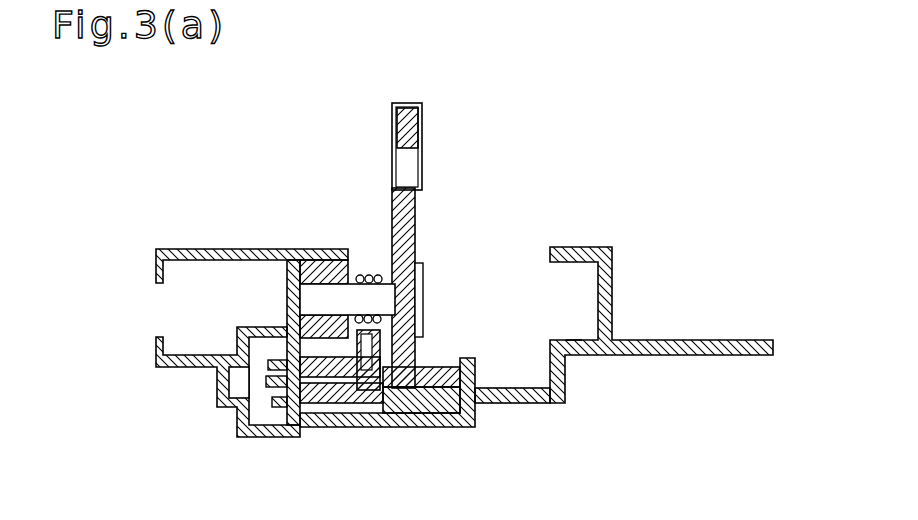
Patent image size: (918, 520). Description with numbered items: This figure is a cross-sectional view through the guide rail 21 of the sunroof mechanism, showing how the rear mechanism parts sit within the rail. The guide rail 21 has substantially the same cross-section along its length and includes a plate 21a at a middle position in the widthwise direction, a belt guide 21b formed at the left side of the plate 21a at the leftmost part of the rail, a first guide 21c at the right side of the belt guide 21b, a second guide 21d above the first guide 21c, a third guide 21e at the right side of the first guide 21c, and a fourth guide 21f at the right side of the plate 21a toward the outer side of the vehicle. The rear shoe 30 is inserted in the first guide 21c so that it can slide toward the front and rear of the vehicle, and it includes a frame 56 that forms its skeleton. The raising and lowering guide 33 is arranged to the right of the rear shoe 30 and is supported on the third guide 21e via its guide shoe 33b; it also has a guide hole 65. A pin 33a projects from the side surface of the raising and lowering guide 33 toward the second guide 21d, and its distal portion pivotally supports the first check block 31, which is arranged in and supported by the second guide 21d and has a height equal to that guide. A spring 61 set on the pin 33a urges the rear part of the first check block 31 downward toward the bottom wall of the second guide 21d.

The guide rail 21 is at (692, 345).
The plate 21a is at (521, 403).
The belt guide 21b is at (256, 430).
The first guide 21c is at (347, 427).
The second guide 21d is at (291, 323).
The third guide 21e is at (430, 410).
The fourth guide 21f is at (578, 334).
The rear shoe 30 is at (256, 425).
The first check block 31 is at (307, 260).
The raising and lowering guide 33 is at (418, 247).
The pin 33a is at (312, 268).
The guide shoe 33b is at (458, 410).
The frame 56 is at (327, 415).
The spring 61 is at (373, 276).
The guide hole 65 is at (412, 148).